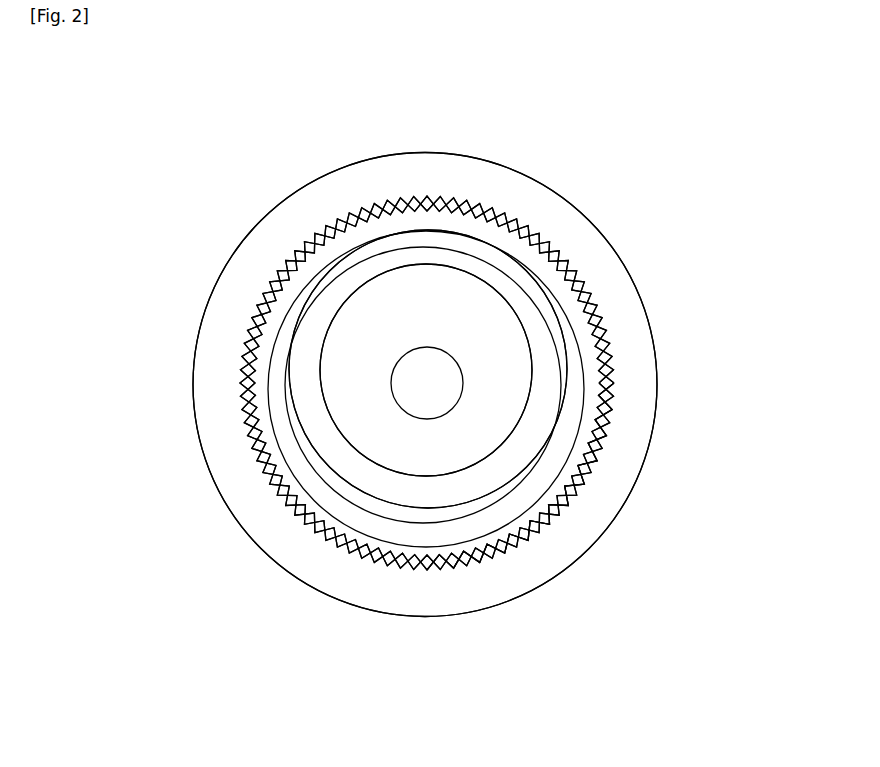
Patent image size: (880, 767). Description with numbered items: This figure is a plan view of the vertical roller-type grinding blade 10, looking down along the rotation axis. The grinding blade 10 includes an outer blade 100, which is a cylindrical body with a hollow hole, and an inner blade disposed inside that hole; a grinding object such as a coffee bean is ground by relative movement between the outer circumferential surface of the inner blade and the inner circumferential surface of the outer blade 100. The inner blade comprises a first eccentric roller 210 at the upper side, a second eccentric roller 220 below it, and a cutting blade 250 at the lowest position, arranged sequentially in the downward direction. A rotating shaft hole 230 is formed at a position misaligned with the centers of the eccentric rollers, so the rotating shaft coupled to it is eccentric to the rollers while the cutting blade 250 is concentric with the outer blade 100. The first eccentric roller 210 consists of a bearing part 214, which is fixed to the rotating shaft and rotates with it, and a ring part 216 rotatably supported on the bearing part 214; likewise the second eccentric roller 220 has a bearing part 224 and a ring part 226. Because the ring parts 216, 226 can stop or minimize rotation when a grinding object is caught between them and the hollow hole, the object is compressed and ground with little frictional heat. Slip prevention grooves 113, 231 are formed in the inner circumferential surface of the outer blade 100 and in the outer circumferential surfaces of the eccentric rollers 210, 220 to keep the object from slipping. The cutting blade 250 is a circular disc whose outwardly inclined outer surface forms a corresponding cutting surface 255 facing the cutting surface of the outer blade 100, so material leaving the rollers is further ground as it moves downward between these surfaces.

The grinding blade 10 is at (694, 223).
The outer blade 100 is at (553, 553).
The slip prevention groove 113 is at (597, 477).
The first eccentric roller 210 is at (207, 143).
The bearing part 214 is at (358, 330).
The ring part 216 is at (368, 267).
The second eccentric roller 220 is at (391, 698).
The bearing part 224 is at (412, 517).
The ring part 226 is at (358, 525).
The rotating shaft hole 230 is at (421, 385).
The slip prevention groove 231 is at (390, 236).
The cutting blade 250 is at (507, 218).
The corresponding cutting surface 255 is at (550, 252).